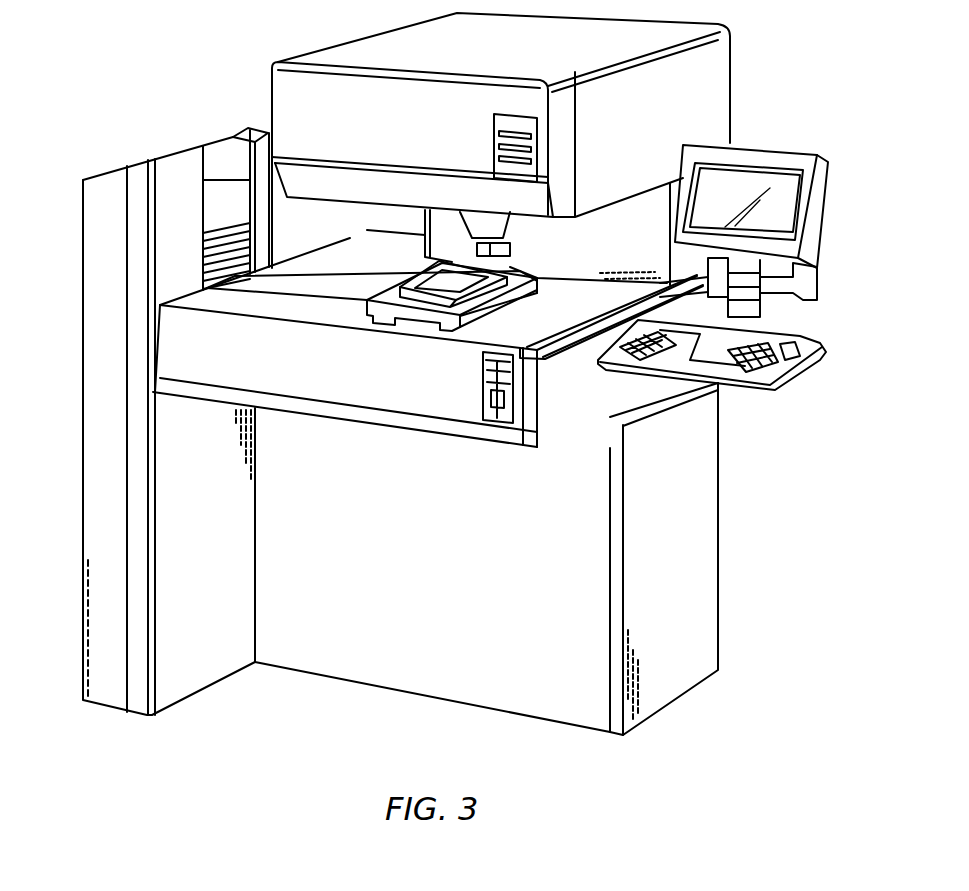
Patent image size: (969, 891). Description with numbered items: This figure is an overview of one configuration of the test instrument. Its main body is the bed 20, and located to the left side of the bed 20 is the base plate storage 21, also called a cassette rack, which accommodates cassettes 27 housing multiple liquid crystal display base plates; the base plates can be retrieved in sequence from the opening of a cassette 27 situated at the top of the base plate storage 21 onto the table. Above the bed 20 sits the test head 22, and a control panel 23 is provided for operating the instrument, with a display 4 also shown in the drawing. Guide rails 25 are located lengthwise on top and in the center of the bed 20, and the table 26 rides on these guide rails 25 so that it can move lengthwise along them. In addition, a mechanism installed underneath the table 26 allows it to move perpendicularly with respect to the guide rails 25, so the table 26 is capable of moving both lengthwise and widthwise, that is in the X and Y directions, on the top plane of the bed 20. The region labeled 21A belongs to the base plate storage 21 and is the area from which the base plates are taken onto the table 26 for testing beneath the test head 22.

The display monitor 4 is at (820, 220).
The bed 20 is at (267, 303).
The base plate storage (cassette rack) 21 is at (102, 435).
The column recess 21A is at (231, 196).
The test head 22 is at (710, 107).
The control panel 23 is at (810, 340).
The guide rails 25 is at (330, 289).
The table 26 is at (417, 317).
The cassette 27 is at (213, 233).